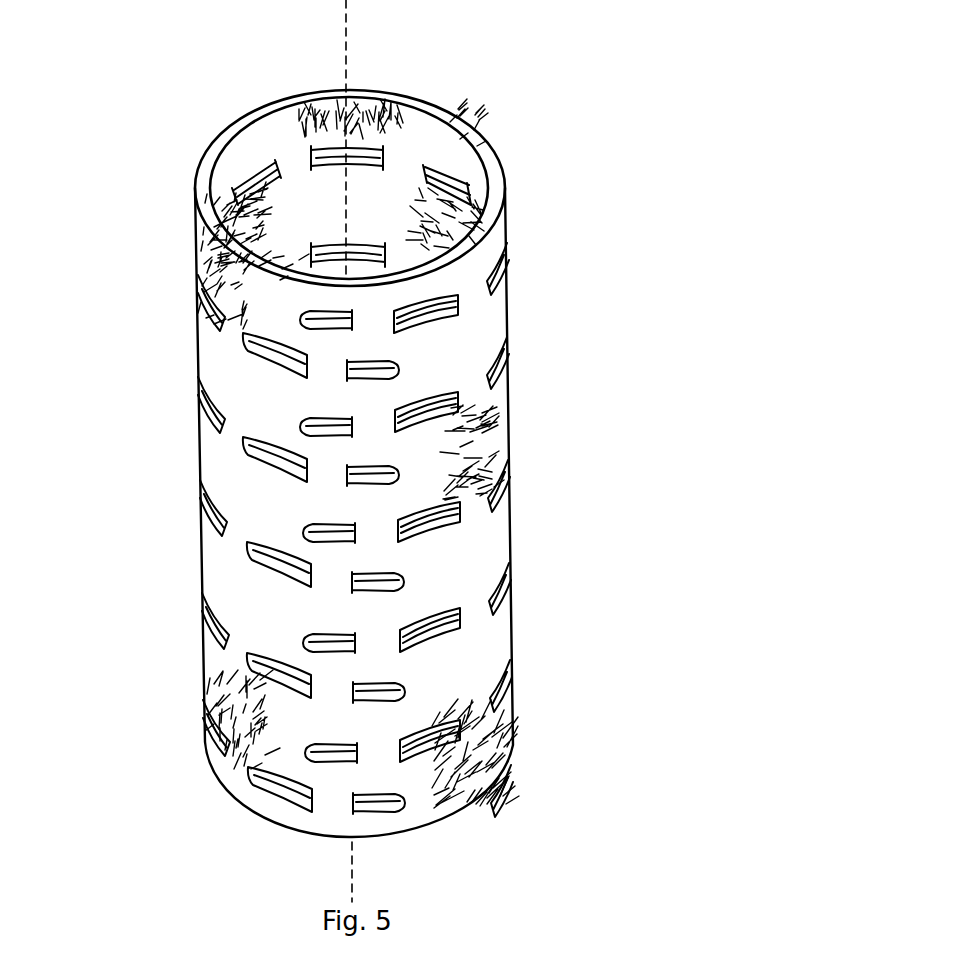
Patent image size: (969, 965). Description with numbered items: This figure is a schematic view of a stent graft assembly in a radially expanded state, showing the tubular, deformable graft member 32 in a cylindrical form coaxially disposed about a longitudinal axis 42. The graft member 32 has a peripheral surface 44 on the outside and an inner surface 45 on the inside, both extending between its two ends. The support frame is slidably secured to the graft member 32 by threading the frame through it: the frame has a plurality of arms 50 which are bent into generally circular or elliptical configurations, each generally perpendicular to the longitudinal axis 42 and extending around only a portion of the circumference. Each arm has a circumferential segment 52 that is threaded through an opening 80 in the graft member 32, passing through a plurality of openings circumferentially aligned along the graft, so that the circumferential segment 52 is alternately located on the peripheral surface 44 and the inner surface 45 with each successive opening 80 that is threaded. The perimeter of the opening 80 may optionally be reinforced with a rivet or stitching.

The graft member 32 is at (463, 330).
The longitudinal axis 42 is at (346, 11).
The peripheral surface 44 is at (200, 250).
The inner surface 45 is at (267, 125).
The arms 50 is at (200, 500).
The circumferential segment 52 is at (262, 570).
The opening 80 is at (355, 582).